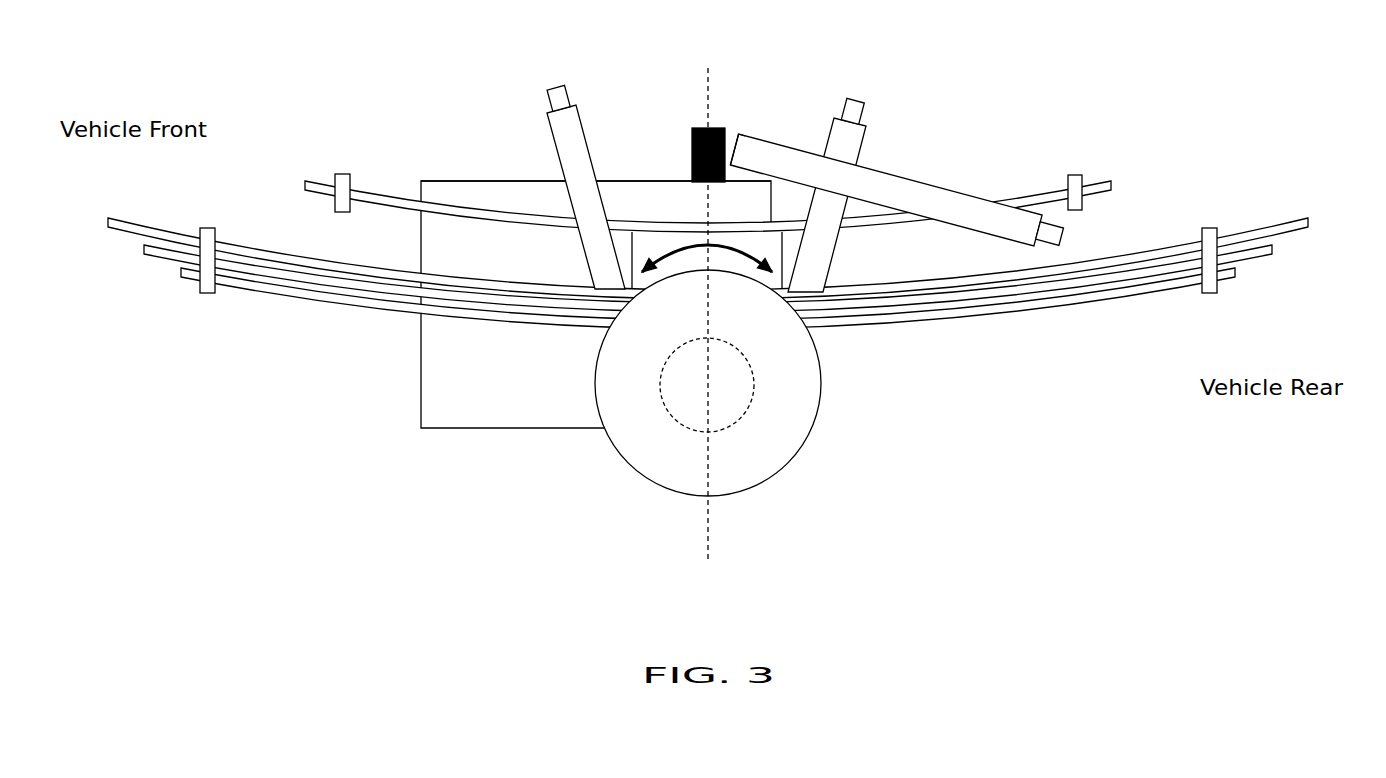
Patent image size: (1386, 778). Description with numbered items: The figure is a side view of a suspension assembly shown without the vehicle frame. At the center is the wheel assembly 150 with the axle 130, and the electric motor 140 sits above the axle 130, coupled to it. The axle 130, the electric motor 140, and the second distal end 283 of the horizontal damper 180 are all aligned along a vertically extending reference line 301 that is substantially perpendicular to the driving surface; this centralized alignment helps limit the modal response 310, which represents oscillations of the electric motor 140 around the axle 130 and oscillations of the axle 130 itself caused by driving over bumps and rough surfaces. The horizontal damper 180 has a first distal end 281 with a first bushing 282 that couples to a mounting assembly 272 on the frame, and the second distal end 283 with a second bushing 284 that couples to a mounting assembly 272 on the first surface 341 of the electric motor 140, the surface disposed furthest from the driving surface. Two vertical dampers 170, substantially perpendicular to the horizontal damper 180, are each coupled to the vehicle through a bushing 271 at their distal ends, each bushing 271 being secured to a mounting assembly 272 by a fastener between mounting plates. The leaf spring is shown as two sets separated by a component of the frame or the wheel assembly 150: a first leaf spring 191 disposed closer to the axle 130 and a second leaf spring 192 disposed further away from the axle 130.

The axle 130 is at (753, 390).
The electric motor 140 is at (472, 181).
The wheel assembly 150 is at (802, 448).
The vertical damper 170 is at (578, 113).
The horizontal damper 180 is at (908, 178).
The first leaf spring 191 is at (1268, 208).
The second leaf spring 192 is at (1092, 173).
The bushing 271 is at (556, 87).
The mounting assembly 272 is at (690, 114).
The first distal end 281 is at (1008, 255).
The first bushing 282 is at (1068, 232).
The second distal end 283 is at (760, 121).
The second bushing 284 is at (732, 137).
The vertically extending reference line 301 is at (707, 512).
The modal response 310 is at (758, 264).
The first surface 341 is at (535, 170).